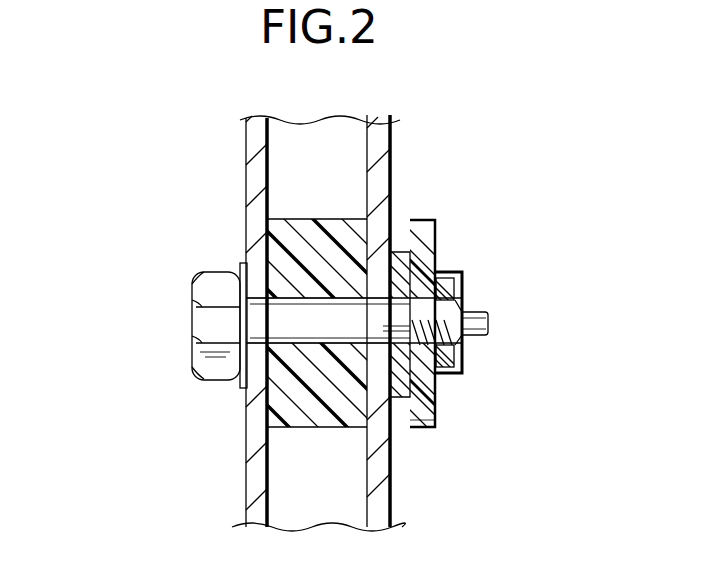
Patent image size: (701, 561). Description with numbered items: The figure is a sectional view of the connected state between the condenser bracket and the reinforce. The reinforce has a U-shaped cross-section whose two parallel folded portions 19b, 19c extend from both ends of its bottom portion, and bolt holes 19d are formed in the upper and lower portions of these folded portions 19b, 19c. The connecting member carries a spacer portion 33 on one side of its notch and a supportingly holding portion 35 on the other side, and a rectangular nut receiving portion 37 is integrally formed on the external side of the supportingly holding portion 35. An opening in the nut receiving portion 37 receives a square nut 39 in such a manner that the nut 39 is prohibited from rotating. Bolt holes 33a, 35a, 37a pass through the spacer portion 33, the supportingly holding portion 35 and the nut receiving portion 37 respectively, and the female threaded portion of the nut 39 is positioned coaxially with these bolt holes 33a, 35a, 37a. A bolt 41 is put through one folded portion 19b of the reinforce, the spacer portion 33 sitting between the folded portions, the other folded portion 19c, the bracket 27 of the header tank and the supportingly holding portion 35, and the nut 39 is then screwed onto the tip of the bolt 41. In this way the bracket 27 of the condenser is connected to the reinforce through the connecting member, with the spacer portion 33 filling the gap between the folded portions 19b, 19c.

The folded portion 19b is at (258, 175).
The folded portion 19c is at (378, 132).
The bolt hole 19d is at (252, 345).
The bracket 27 is at (395, 260).
The spacer portion 33 is at (316, 230).
The bolt hole 33a is at (322, 346).
The supportingly holding portion 35 is at (436, 232).
The bolt hole 35a is at (425, 425).
The nut receiving portion 37 is at (472, 355).
The bolt hole 37a is at (441, 350).
The square nut 39 is at (455, 290).
The bolt 41 is at (205, 318).